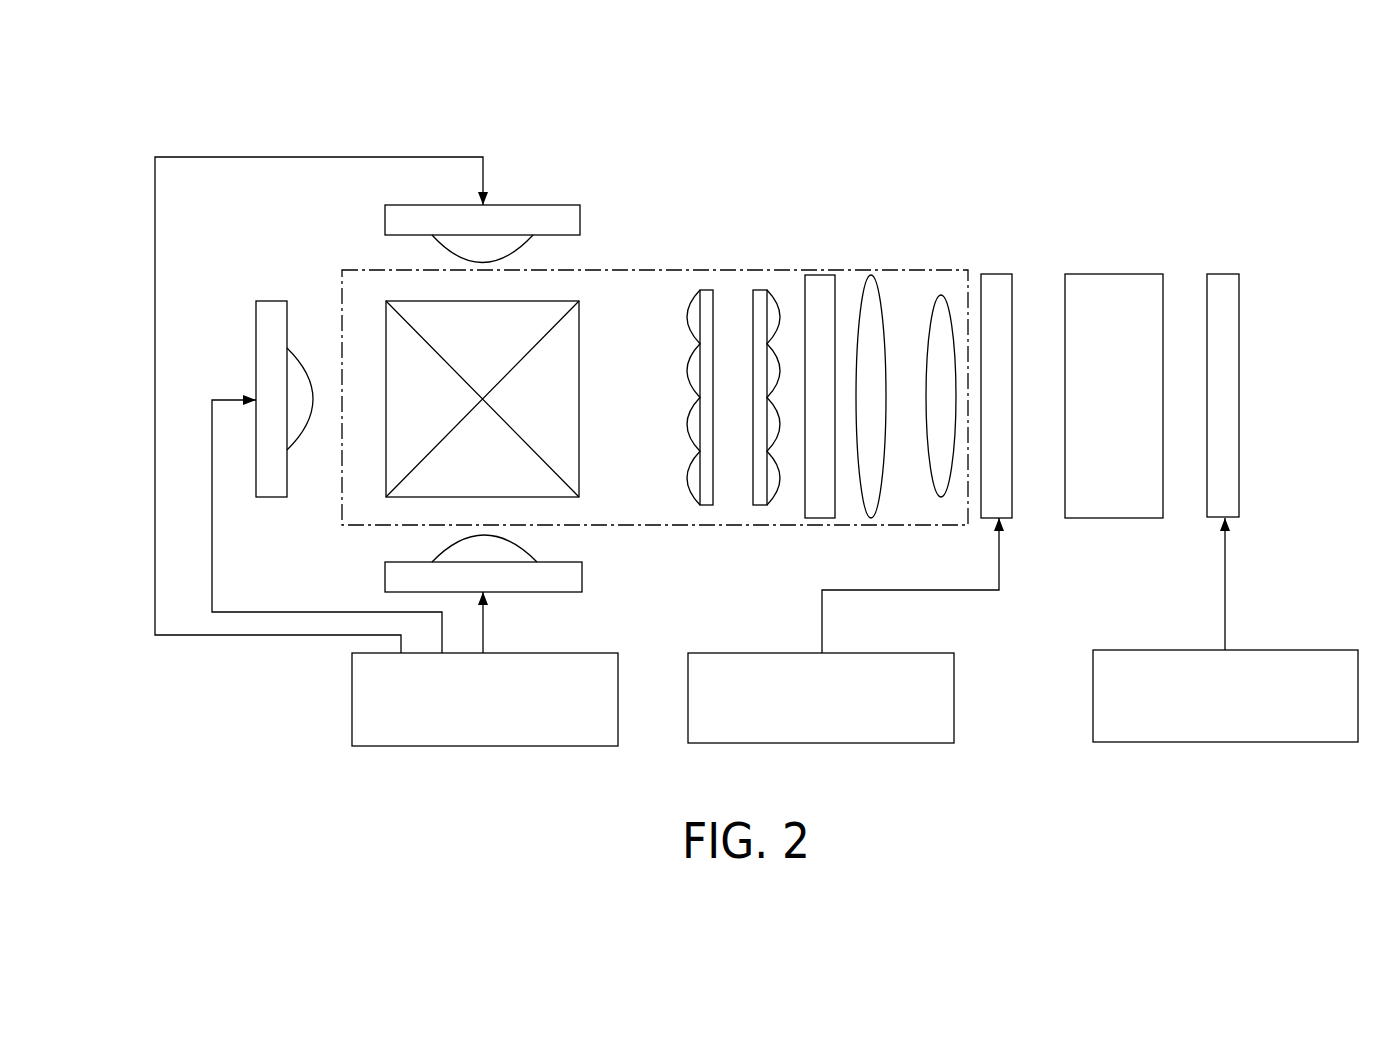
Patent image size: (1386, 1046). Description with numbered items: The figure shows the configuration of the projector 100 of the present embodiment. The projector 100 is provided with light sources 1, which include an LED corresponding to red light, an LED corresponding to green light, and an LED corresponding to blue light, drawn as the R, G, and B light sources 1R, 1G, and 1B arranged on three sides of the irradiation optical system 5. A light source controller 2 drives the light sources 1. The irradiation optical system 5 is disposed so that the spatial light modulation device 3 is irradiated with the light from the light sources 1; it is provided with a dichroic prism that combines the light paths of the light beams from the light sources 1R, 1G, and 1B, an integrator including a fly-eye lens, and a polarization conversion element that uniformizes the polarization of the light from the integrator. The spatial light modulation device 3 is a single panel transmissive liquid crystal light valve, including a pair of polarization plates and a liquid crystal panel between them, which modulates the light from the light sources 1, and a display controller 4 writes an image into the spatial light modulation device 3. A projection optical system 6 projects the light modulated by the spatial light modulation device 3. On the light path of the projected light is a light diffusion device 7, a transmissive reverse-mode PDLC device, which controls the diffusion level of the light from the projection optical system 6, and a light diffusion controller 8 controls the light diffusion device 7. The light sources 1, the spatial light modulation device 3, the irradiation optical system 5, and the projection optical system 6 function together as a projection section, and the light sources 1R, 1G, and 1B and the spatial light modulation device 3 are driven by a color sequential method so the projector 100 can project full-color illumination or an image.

The projector 100 is at (1183, 173).
The light sources 1 is at (456, 387).
The R light source 1R is at (582, 220).
The G light source 1G is at (270, 301).
The B light source 1B is at (582, 577).
The light source controller 2 is at (540, 653).
The spatial light modulation device 3 is at (997, 274).
The display controller 4 is at (885, 653).
The irradiation optical system 5 is at (908, 268).
The projection optical system 6 is at (1112, 274).
The light diffusion device 7 is at (1222, 274).
The light diffusion controller 8 is at (1290, 650).